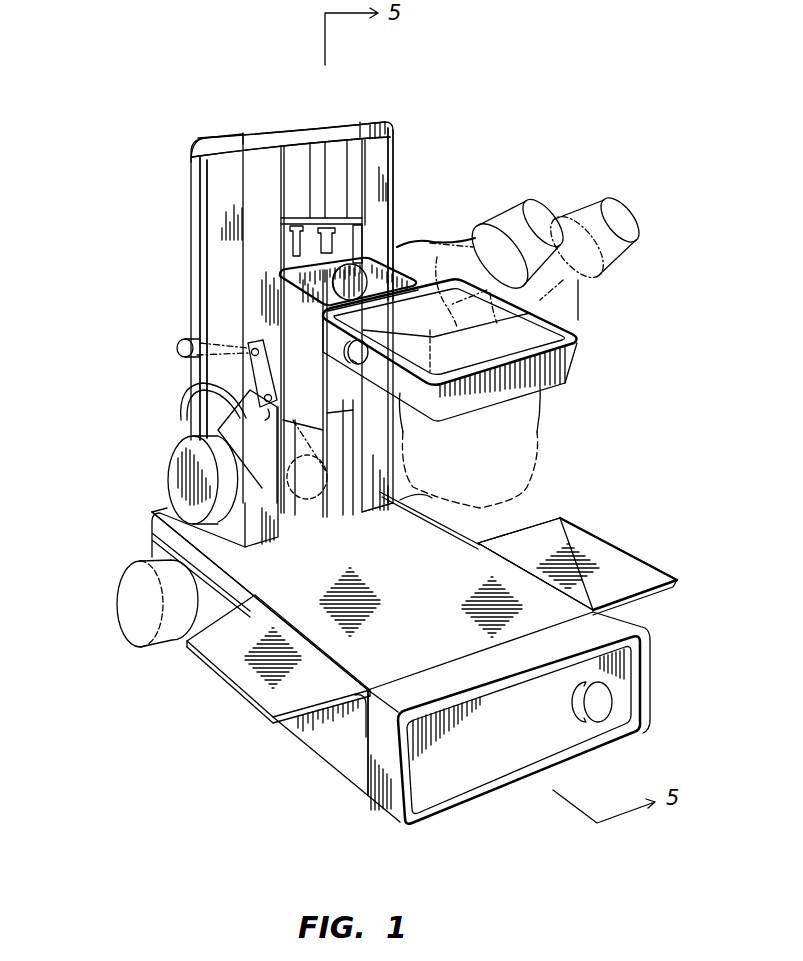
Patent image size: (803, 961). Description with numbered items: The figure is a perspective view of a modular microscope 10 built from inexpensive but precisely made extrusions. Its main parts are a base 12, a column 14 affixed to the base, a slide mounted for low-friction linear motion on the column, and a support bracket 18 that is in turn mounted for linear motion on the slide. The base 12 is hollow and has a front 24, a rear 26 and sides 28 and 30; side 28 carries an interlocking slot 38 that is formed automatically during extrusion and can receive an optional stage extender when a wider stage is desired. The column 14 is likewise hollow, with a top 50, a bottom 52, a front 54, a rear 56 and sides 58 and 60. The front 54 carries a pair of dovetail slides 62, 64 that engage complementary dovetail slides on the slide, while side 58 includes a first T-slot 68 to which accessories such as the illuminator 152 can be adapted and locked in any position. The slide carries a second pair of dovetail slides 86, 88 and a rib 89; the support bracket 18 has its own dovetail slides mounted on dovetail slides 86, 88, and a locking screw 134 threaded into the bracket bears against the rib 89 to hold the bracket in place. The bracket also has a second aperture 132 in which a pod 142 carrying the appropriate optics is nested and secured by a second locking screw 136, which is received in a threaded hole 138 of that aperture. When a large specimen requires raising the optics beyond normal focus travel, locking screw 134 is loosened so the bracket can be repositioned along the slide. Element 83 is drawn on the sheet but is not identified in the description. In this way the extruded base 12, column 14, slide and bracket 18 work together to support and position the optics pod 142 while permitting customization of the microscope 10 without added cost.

The microscope 10 is at (130, 104).
The base 12 is at (645, 656).
The column 14 is at (182, 378).
The support bracket 18 is at (575, 365).
The front 24 is at (645, 717).
The rear 26 is at (152, 520).
The side 28 is at (330, 758).
The side 30 is at (478, 534).
The interlocking slot 38 is at (258, 594).
The top 50 is at (213, 155).
The bottom 52 is at (265, 535).
The front 54 is at (375, 512).
The rear 56 is at (190, 240).
The side 58 is at (230, 165).
The side 60 is at (393, 153).
The dovetail slide 62 is at (290, 160).
The dovetail slide 64 is at (360, 150).
The first T-slot 68 is at (200, 205).
The top cap 83 is at (265, 132).
The dovetail slide 86 is at (363, 237).
The dovetail slide 88 is at (283, 252).
The rib 89 is at (300, 225).
The second aperture 132 is at (482, 356).
The locking screw 134 is at (352, 292).
The second locking screw 136 is at (358, 364).
The hole 138 is at (372, 346).
The pod 142 is at (593, 307).
The illuminator 152 is at (312, 505).